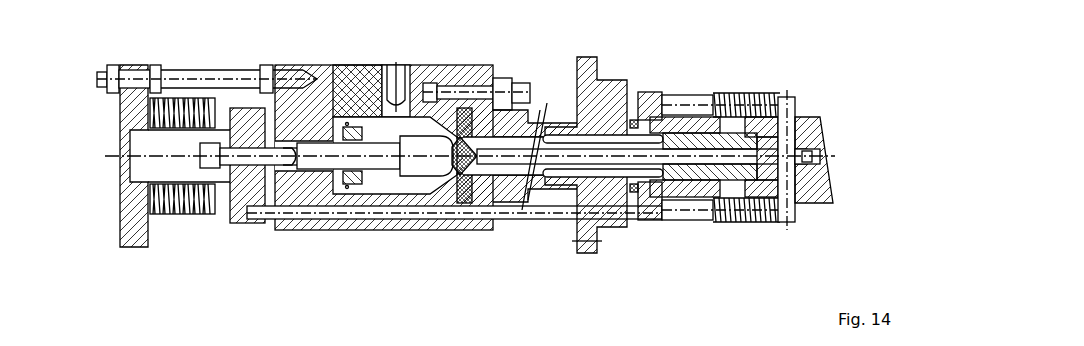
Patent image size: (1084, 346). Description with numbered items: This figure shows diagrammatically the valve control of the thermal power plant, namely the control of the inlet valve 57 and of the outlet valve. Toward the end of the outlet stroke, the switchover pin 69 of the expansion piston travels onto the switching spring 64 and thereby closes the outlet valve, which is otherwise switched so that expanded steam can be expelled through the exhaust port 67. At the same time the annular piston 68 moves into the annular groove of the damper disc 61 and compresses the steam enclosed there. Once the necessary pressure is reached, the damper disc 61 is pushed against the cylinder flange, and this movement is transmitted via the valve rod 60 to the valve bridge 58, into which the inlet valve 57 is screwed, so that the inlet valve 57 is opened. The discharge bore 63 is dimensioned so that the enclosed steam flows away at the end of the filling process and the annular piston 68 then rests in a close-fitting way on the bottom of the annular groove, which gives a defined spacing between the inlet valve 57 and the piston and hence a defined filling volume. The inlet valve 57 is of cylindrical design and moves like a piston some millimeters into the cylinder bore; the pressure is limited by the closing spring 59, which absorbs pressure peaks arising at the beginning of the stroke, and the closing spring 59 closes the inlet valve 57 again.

The inlet valve 57 is at (380, 148).
The valve bridge 58 is at (246, 123).
The closing spring 59 is at (185, 98).
The valve rod 60 is at (544, 215).
The damper disc 61 is at (651, 220).
The discharge bore 63 is at (638, 113).
The switching spring 64 is at (767, 95).
The exhaust port 67 is at (562, 133).
The annular piston 68 is at (692, 120).
The switchover pin 69 is at (790, 97).